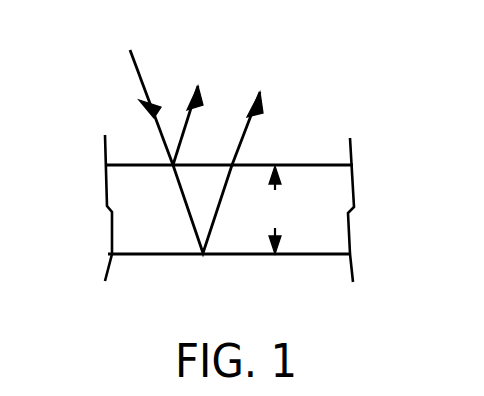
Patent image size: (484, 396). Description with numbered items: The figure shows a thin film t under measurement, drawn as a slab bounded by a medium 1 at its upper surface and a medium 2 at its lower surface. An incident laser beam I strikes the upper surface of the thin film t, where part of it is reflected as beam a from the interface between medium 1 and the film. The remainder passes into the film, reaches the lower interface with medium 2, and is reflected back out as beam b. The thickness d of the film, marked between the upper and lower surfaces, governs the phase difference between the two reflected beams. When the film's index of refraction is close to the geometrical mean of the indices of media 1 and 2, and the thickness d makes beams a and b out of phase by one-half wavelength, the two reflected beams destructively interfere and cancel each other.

The medium 1 is at (119, 150).
The medium 2 is at (337, 269).
The thin film t is at (310, 191).
The thickness of the film d is at (273, 210).
The incident laser beam I is at (148, 91).
The reflected beam a is at (191, 113).
The reflected beam b is at (222, 159).